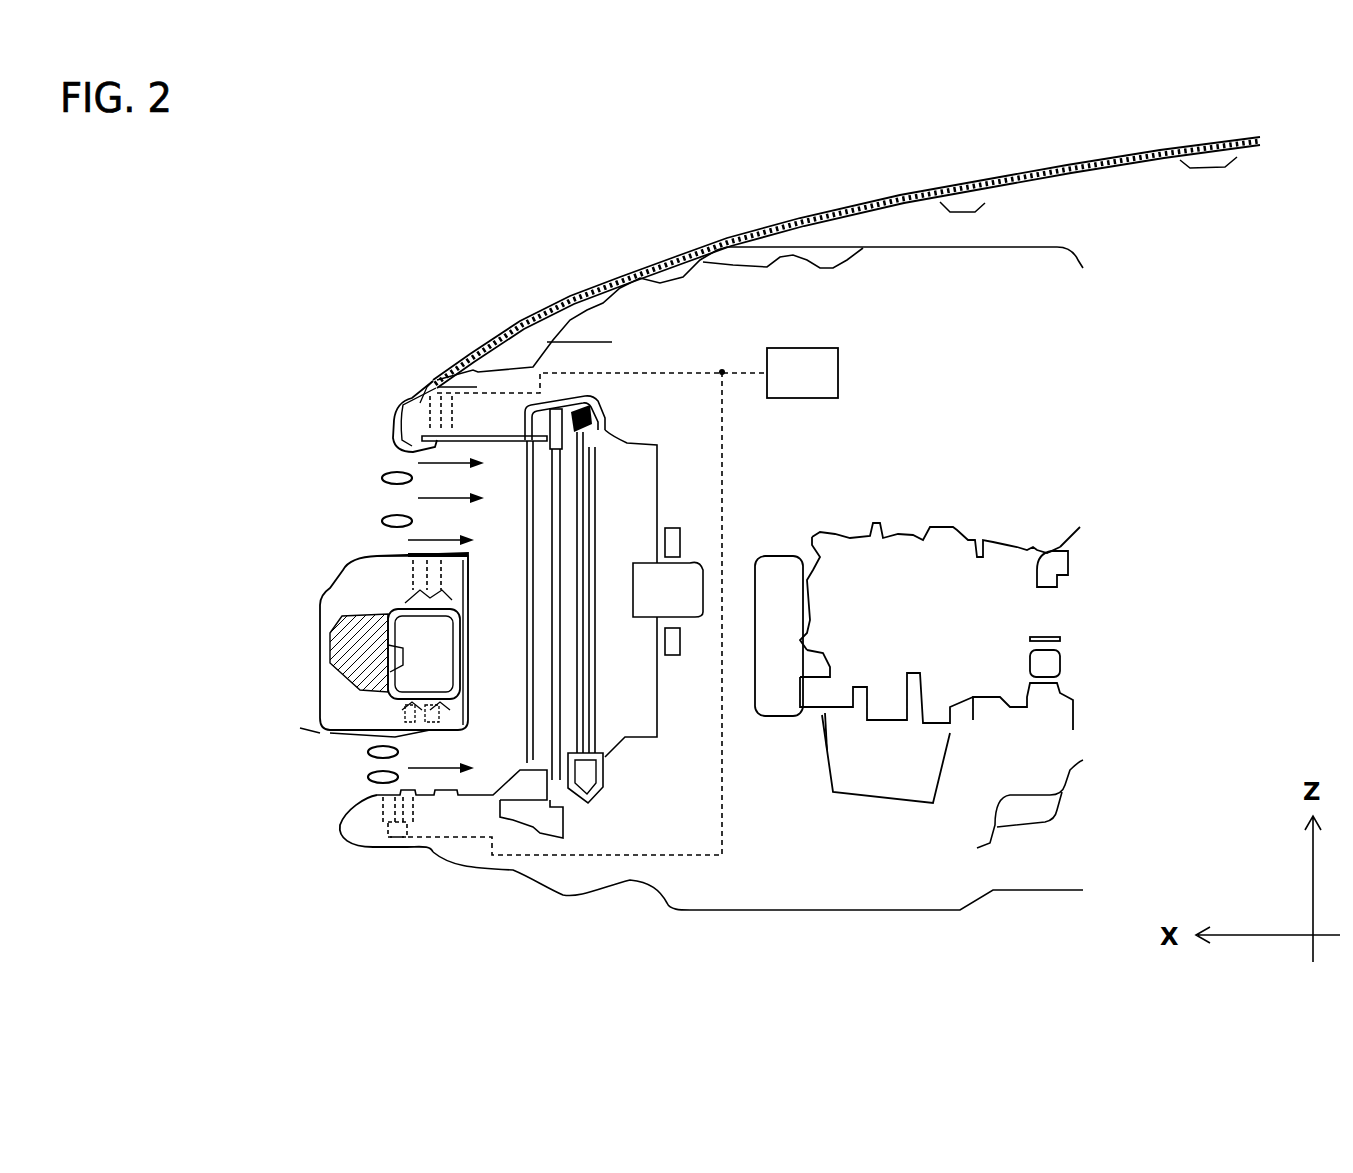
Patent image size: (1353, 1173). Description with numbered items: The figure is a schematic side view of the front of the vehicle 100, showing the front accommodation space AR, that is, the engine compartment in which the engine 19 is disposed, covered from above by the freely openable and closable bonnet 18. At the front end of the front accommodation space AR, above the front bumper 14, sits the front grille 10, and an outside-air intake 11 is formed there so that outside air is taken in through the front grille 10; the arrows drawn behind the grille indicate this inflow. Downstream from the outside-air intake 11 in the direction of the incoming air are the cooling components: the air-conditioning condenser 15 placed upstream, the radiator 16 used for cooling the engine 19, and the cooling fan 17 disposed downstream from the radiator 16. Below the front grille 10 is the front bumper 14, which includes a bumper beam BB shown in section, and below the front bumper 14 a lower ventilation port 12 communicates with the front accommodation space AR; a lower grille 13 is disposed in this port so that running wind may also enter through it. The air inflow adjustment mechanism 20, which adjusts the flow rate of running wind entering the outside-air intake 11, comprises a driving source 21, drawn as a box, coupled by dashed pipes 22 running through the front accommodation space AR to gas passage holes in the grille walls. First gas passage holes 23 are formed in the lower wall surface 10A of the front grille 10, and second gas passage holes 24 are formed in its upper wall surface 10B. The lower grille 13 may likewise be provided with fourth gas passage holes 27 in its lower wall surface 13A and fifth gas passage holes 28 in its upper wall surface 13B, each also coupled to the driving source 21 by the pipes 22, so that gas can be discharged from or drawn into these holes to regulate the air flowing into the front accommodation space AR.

The vehicle 100 is at (287, 179).
The bonnet (front hood) 18 is at (1067, 163).
The front grille 10 is at (380, 470).
The lower wall surface of the front grille 10A is at (387, 553).
The upper wall surface of the front grille 10B is at (403, 452).
The outside-air intake 11 is at (387, 495).
The lower ventilation port 12 is at (362, 763).
The lower grille 13 is at (367, 778).
The lower wall surface of the lower grille 13A is at (420, 797).
The upper wall surface of the lower grille 13B is at (390, 737).
The front bumper 14 is at (320, 663).
The bumper beam BB is at (415, 652).
The air-conditioning condenser 15 is at (560, 470).
The radiator 16 is at (587, 727).
The cooling fan 17 is at (683, 640).
The engine 19 is at (924, 565).
The air inflow adjustment mechanism 20 is at (578, 568).
The driving source 21 is at (837, 362).
The pipe 22 is at (685, 370).
The first gas passage holes 23 is at (403, 568).
The second gas passage holes 24 is at (430, 405).
The fourth gas passage holes 27 is at (375, 817).
The fifth gas passage holes 28 is at (437, 717).
The front accommodation space AR is at (1137, 362).